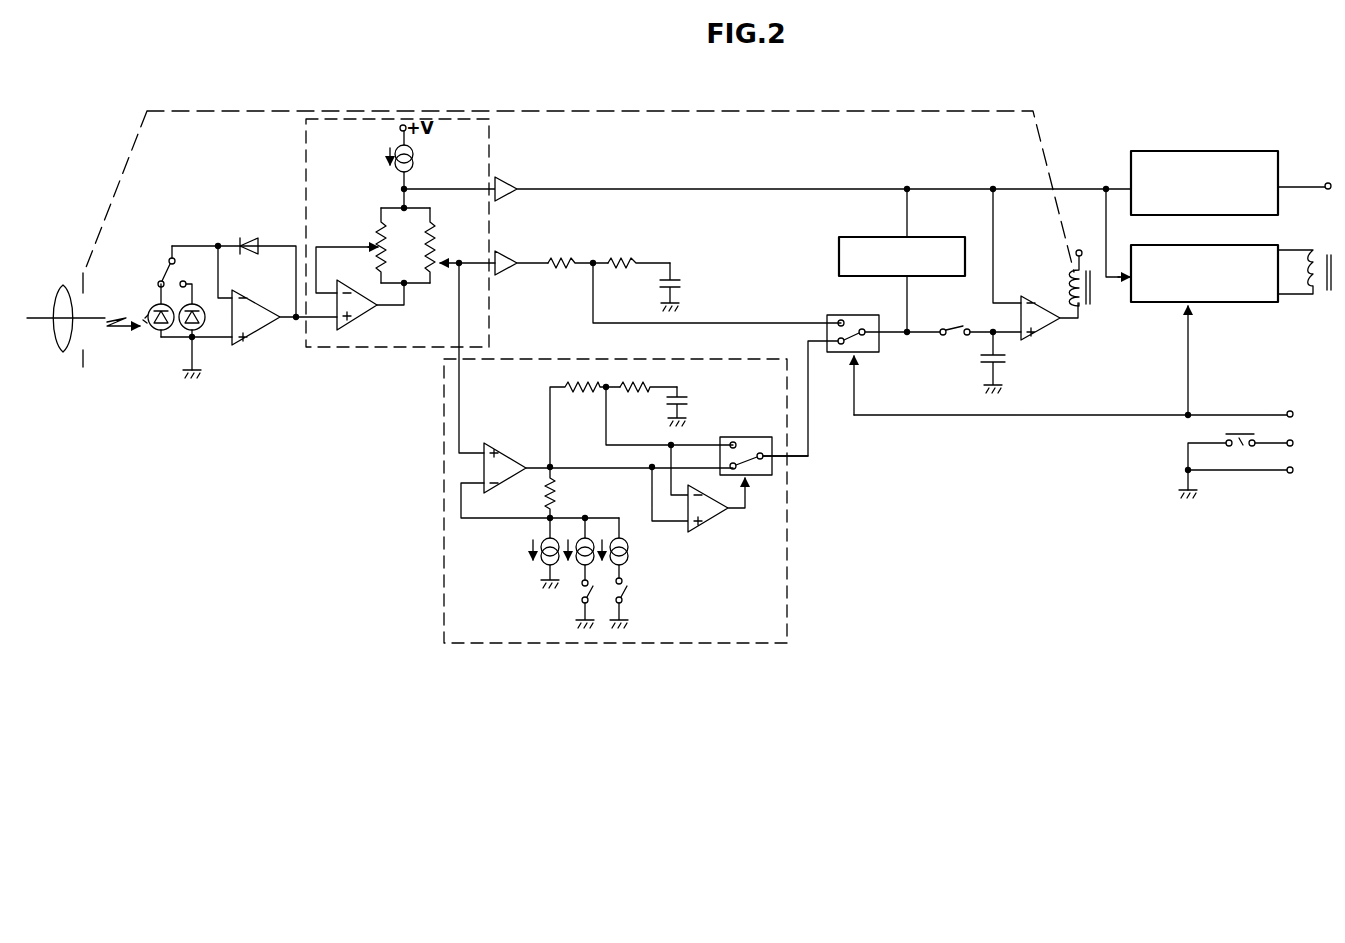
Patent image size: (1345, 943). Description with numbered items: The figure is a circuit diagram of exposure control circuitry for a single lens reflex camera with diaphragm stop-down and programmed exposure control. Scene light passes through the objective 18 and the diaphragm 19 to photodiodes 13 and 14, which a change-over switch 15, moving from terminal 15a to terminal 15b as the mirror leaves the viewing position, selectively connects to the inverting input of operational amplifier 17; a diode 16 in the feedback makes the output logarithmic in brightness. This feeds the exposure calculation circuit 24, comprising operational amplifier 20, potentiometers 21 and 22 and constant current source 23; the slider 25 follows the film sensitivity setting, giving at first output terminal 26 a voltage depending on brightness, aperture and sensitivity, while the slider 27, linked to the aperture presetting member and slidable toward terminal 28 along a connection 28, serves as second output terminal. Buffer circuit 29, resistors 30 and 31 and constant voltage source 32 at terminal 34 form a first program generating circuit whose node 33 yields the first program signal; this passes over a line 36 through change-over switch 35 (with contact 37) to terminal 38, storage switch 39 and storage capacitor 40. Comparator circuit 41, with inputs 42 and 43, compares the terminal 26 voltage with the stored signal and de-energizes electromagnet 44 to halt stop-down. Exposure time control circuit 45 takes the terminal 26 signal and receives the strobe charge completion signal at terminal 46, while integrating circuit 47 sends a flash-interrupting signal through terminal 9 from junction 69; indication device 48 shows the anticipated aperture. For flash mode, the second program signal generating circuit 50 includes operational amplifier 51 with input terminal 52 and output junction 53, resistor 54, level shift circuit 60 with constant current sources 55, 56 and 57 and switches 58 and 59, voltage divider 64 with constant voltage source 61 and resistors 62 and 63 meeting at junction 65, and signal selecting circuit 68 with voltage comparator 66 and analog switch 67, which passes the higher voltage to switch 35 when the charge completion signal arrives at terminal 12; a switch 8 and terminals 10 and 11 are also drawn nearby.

The switch 8 is at (1233, 466).
The output terminal 9 is at (1329, 183).
The terminal 10 is at (1292, 440).
The terminal 11 is at (1292, 468).
The terminal 12 is at (1292, 411).
The photodiode 13 is at (150, 330).
The photodiode 14 is at (183, 330).
The change-over switch 15 is at (167, 262).
The terminal 15a is at (157, 287).
The terminal 15b is at (182, 278).
The diode 16 is at (249, 238).
The operational amplifier 17 is at (255, 335).
The objective 18 is at (62, 352).
The diaphragm 19 is at (85, 370).
The operational amplifier 20 is at (360, 316).
The potentiometer 21 is at (378, 235).
The potentiometer 22 is at (438, 242).
The constant current source 23 is at (414, 158).
The exposure calculation circuit 24 is at (358, 347).
The slider 25 is at (354, 248).
The first output terminal 26 is at (440, 189).
The slider 27 is at (459, 262).
The terminal 28 is at (405, 288).
The buffer circuit 29 is at (515, 262).
The resistor 30 is at (562, 260).
The resistor 31 is at (626, 262).
The constant voltage source 32 is at (690, 283).
The node 33 is at (590, 268).
The terminal 34 is at (672, 270).
The change-over switch 35 is at (855, 315).
The connection line 36 is at (780, 323).
The switch contact 37 is at (810, 345).
The terminal 38 is at (907, 340).
The storage switch 39 is at (948, 336).
The storage capacitor 40 is at (980, 360).
The comparator circuit 41 is at (1052, 332).
The capacitor 42 is at (1010, 334).
The input line 43 is at (1024, 306).
The electromagnet 44 is at (1093, 302).
The exposure time control circuit 45 is at (1164, 302).
The terminal 46 is at (1189, 330).
The integrating circuit 47 is at (1200, 151).
The indication device 48 is at (858, 237).
The second program signal generating circuit 50 is at (787, 512).
The operational amplifier 51 is at (495, 486).
The input terminal 52 is at (473, 450).
The junction 53 is at (536, 462).
The resistor 54 is at (556, 490).
The constant current source 55 is at (540, 560).
The constant current source 56 is at (578, 565).
The constant current source 57 is at (628, 545).
The switch 58 is at (582, 600).
The switch 59 is at (624, 597).
The level shift circuit 60 is at (456, 557).
The constant voltage source 61 is at (680, 396).
The resistor 62 is at (580, 390).
The resistor 63 is at (642, 390).
The voltage divider 64 is at (478, 384).
The junction 65 is at (606, 386).
The voltage comparator 66 is at (714, 522).
The changeover switch 67 is at (757, 475).
The signal selecting circuit 68 is at (728, 615).
The junction 69 is at (1106, 178).